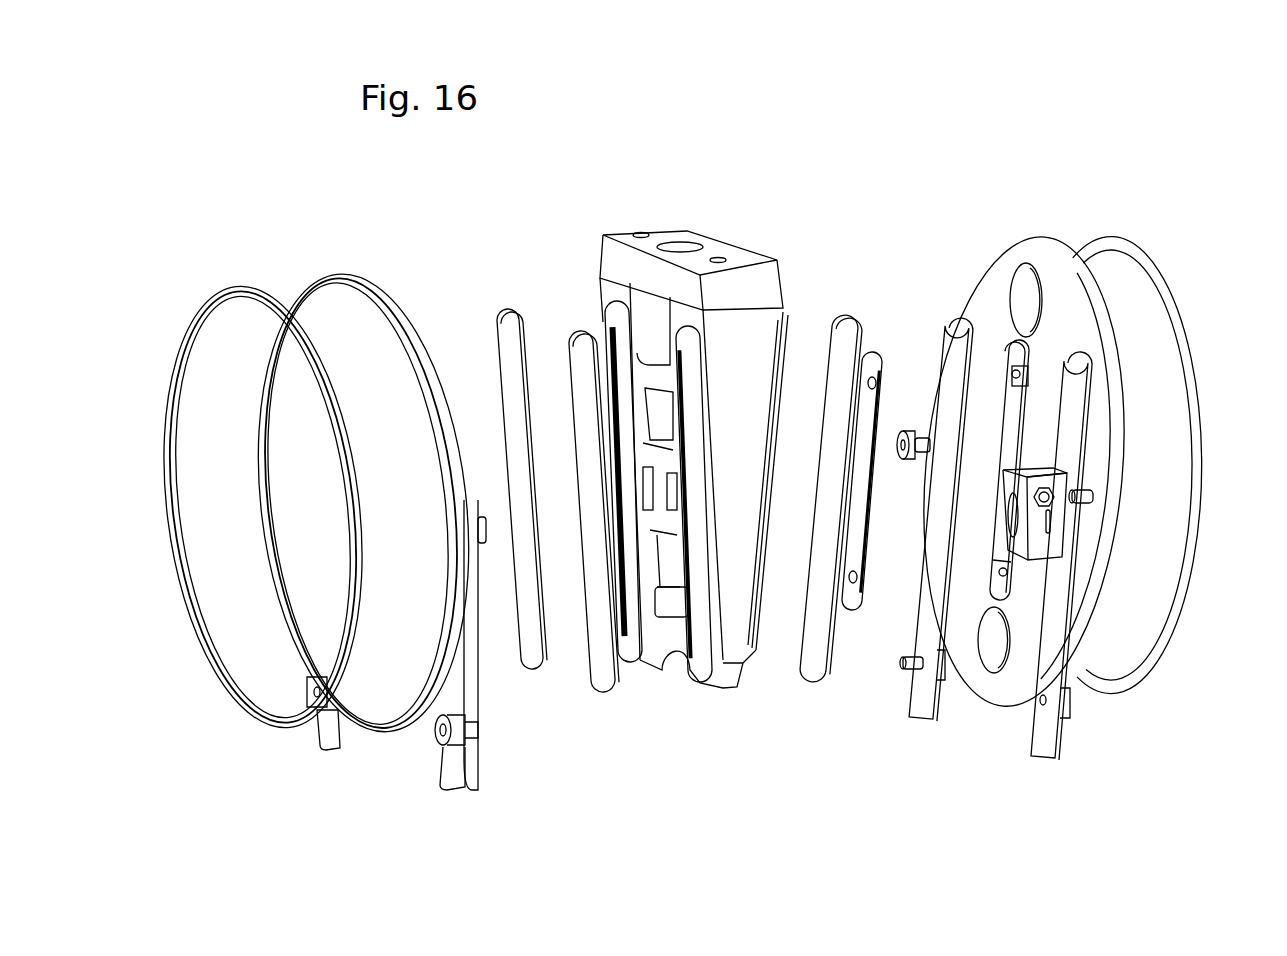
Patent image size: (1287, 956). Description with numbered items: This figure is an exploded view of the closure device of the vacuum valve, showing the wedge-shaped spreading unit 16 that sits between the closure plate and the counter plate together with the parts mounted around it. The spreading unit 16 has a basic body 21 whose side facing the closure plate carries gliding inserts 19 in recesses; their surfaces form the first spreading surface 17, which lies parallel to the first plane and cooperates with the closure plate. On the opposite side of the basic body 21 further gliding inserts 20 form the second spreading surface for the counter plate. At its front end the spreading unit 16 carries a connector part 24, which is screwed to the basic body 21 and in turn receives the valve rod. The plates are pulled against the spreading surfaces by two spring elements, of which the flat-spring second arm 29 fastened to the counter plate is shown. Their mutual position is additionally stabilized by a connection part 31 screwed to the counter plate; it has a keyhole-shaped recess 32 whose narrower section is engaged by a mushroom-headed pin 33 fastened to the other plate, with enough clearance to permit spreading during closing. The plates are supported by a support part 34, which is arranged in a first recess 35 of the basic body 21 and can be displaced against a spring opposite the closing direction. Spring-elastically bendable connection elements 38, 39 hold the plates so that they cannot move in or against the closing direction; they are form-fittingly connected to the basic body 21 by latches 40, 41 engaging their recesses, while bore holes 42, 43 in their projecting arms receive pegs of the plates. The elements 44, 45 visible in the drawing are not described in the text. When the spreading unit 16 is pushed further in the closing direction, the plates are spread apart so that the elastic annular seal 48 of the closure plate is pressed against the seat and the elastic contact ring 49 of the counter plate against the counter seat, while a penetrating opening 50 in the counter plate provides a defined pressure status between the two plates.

The spreading unit 16 is at (789, 246).
The first spreading surface 17 is at (576, 373).
The gliding inserts 19 is at (603, 660).
The gliding inserts 20 is at (805, 673).
The basic body 21 is at (770, 337).
The connector part 24 is at (745, 290).
The second arm 29 is at (954, 335).
The connection part 31 is at (1047, 542).
The keyhole-shaped recess 32 is at (1027, 528).
The pin 33 is at (920, 433).
The support part 34 is at (663, 407).
The first recess 35 is at (640, 400).
The connection element 38 is at (625, 515).
The connection element 39 is at (865, 572).
The latch 40 is at (633, 657).
The latch 41 is at (716, 684).
The bore hole 42 is at (872, 370).
The bore hole 43 is at (855, 582).
The bolt 44 is at (1028, 365).
The pin 45 is at (1007, 573).
The elastic annular seal 48 is at (202, 308).
The elastic contact ring 49 is at (1180, 282).
The penetrating opening 50 is at (1035, 280).